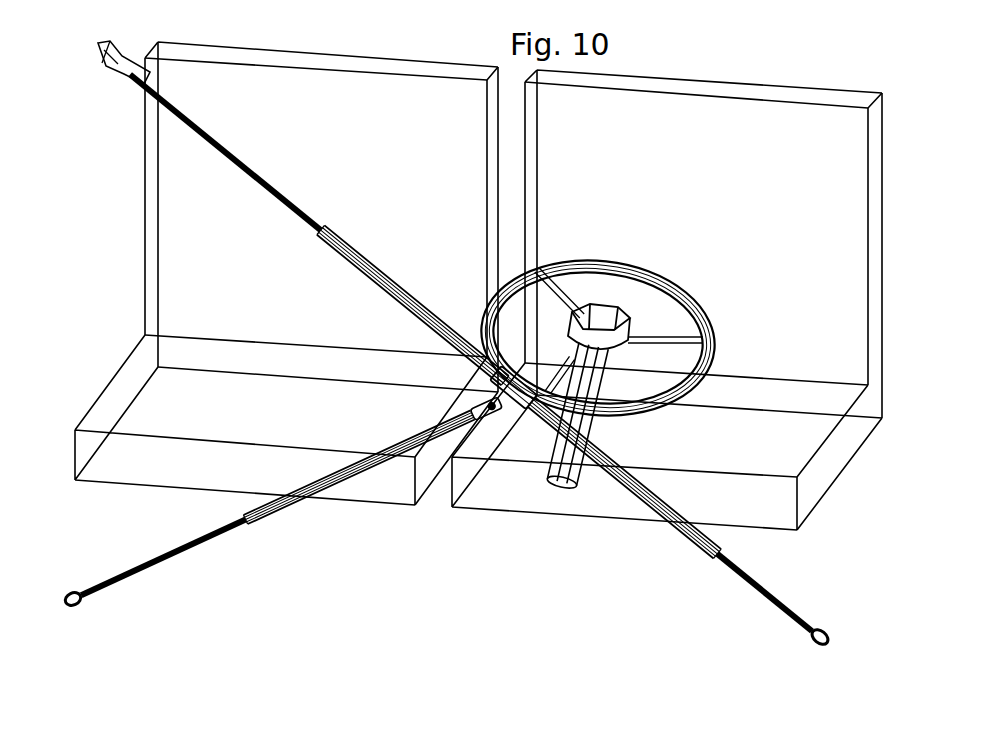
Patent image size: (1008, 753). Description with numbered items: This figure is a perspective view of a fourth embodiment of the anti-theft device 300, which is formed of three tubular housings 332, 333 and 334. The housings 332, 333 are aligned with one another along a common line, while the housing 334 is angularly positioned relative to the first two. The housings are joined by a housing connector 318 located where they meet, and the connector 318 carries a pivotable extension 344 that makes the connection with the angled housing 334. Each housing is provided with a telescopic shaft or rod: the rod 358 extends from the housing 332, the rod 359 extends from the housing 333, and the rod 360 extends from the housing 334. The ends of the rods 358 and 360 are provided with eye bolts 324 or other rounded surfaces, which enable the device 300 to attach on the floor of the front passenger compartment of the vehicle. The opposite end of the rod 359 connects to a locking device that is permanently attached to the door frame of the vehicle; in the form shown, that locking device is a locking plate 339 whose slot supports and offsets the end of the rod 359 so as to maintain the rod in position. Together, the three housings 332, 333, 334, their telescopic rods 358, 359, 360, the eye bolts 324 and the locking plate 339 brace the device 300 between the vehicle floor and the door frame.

The anti-theft device 300 is at (447, 553).
The housing connector 318 is at (493, 379).
The eye bolts 324 is at (71, 591).
The tubular housing 332 is at (690, 540).
The tubular housing 333 is at (372, 268).
The tubular housing 334 is at (366, 460).
The locking plate 339 is at (108, 52).
The pivotable extension 344 is at (500, 408).
The telescopic rod 358 is at (757, 590).
The telescopic rod 359 is at (253, 168).
The telescopic rod 360 is at (170, 560).